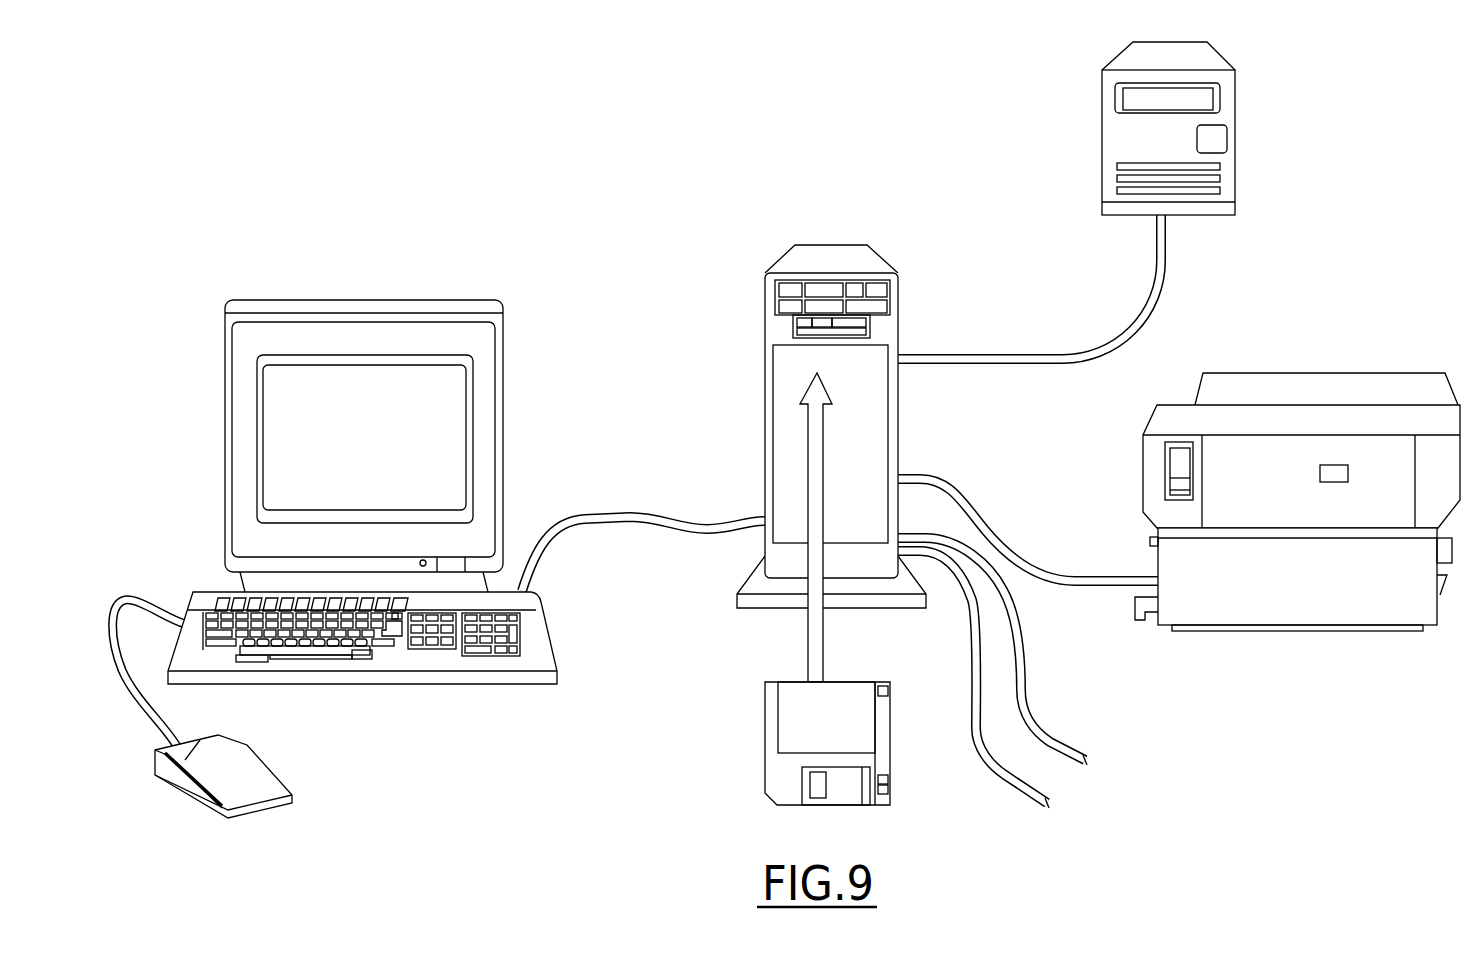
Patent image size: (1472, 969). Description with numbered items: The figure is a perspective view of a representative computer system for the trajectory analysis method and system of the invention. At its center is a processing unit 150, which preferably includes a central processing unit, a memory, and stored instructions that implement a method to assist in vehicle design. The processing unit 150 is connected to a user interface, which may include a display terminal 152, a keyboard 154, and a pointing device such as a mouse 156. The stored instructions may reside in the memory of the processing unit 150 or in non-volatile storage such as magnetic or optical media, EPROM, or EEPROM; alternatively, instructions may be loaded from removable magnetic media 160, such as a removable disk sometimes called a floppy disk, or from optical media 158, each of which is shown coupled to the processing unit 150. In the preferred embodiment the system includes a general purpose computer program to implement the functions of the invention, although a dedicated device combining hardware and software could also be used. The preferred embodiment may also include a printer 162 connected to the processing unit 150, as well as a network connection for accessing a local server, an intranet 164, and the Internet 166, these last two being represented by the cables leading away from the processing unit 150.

The processing unit 150 is at (765, 300).
The display terminal 152 is at (352, 300).
The keyboard 154 is at (475, 688).
The pointing device 156 is at (260, 762).
The optical media 158 is at (1102, 123).
The removable magnetic media 160 is at (765, 718).
The printer 162 is at (1297, 375).
The intranet 164 is at (973, 733).
The Internet 166 is at (1023, 693).